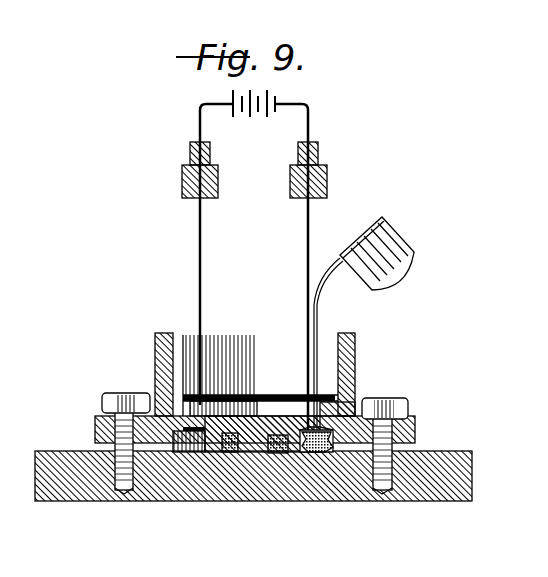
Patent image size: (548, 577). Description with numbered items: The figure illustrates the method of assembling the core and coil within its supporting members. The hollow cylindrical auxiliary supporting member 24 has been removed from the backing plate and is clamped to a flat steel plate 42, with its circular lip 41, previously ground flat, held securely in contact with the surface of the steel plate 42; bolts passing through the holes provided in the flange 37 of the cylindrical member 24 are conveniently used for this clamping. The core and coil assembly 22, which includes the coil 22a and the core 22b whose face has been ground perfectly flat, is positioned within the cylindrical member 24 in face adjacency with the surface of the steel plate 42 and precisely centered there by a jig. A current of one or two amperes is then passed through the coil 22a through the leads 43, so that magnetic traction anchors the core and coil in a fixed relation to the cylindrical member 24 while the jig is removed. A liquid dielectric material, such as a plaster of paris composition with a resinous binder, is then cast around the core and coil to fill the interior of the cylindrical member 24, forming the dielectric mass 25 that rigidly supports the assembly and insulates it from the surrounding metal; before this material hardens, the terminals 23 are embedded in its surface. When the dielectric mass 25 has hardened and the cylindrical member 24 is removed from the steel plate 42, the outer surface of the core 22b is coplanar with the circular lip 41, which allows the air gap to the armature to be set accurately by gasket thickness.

The core and coil assembly 22 is at (275, 415).
The coil 22a is at (228, 452).
The core 22b is at (257, 448).
The terminals 23 is at (327, 174).
The hollow cylindrical auxiliary supporting member 24 is at (357, 352).
The molded plastic dielectric material 25 is at (322, 452).
The flange 37 is at (412, 424).
The circular lip 41 is at (170, 448).
The flat steel plate 42 is at (452, 488).
The leads 43 is at (198, 245).